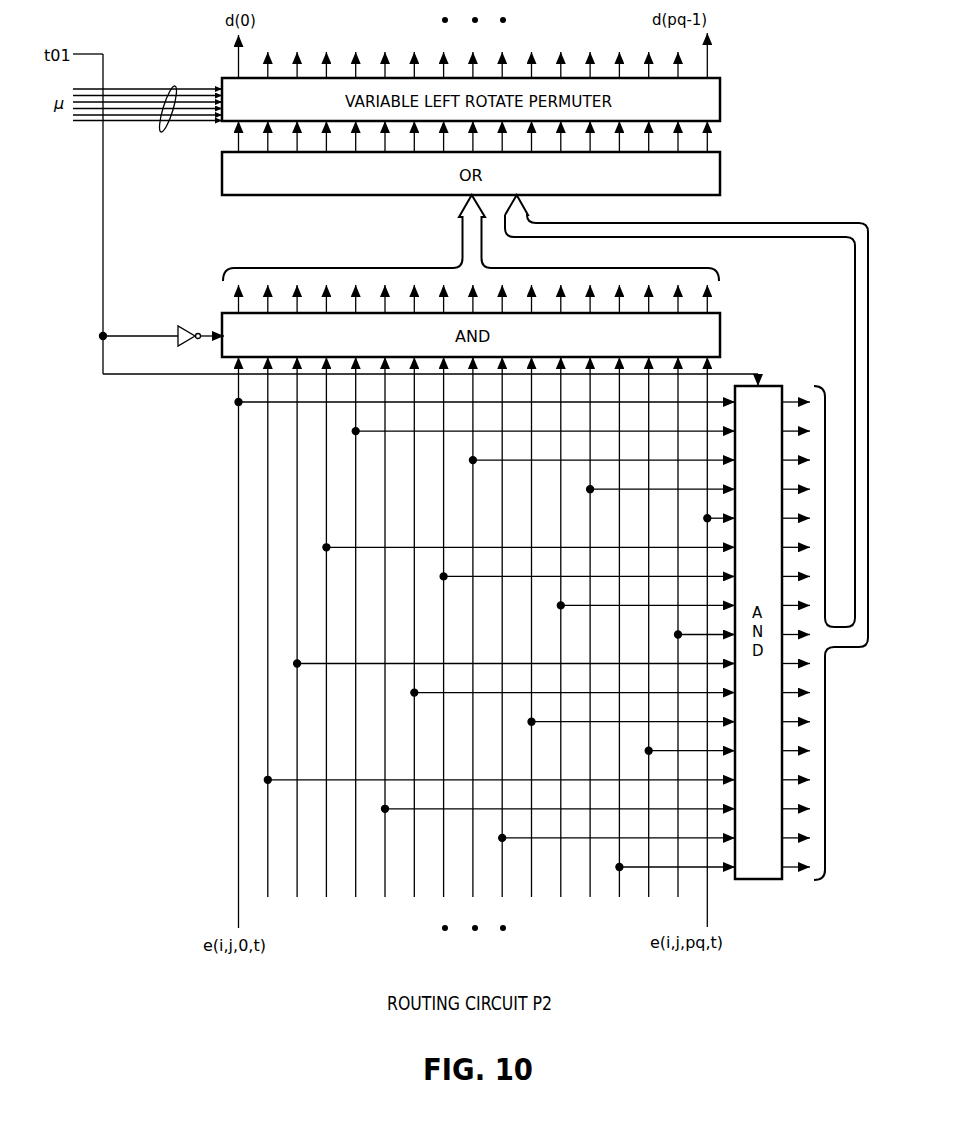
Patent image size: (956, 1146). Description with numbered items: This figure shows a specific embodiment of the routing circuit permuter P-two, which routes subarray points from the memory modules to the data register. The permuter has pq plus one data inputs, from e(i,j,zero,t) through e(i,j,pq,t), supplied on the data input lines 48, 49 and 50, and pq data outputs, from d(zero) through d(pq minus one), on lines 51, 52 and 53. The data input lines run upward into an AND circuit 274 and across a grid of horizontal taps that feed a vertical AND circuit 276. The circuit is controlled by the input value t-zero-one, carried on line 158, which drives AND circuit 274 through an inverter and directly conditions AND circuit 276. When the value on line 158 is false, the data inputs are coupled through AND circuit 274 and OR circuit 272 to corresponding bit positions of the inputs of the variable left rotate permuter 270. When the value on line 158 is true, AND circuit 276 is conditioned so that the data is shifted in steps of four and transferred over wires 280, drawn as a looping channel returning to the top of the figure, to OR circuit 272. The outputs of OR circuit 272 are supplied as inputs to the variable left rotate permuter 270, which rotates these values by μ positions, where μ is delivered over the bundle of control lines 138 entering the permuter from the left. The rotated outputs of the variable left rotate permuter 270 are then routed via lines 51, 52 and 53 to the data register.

The line 158 is at (104, 66).
The rotation control bus 138 is at (162, 131).
The variable left rotate permuter 270 is at (721, 102).
The OR circuit 272 is at (721, 175).
The AND circuit 274 is at (721, 336).
The AND circuit 276 is at (760, 881).
The wires 280 is at (853, 270).
The line 51 is at (236, 55).
The line 52 is at (269, 64).
The line 53 is at (676, 53).
The data input line 48 is at (238, 912).
The data input line 49 is at (268, 880).
The data input line 50 is at (709, 912).